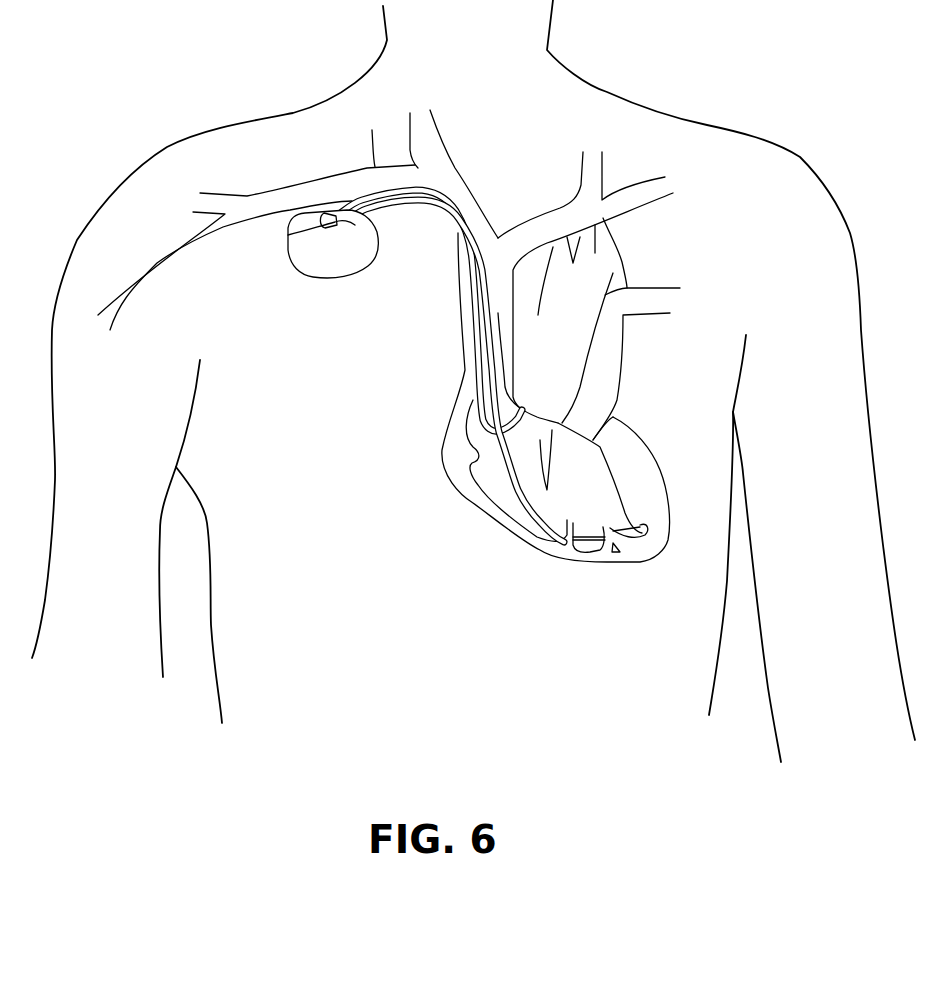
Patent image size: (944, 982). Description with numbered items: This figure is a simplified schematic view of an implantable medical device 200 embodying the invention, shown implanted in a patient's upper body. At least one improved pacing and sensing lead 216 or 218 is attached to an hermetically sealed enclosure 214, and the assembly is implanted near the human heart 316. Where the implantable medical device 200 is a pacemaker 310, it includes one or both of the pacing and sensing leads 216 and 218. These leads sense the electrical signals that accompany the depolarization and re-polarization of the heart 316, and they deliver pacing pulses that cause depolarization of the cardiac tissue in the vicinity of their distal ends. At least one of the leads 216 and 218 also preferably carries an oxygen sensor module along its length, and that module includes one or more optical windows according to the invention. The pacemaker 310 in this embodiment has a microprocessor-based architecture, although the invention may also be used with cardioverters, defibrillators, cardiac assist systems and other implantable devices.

The implantable medical device 200 is at (247, 298).
The hermetically sealed enclosure 214 is at (337, 275).
The pacing and sensing lead 216 is at (470, 292).
The pacing and sensing lead 218 is at (443, 450).
The pacemaker 310 is at (288, 230).
The human heart 316 is at (530, 548).